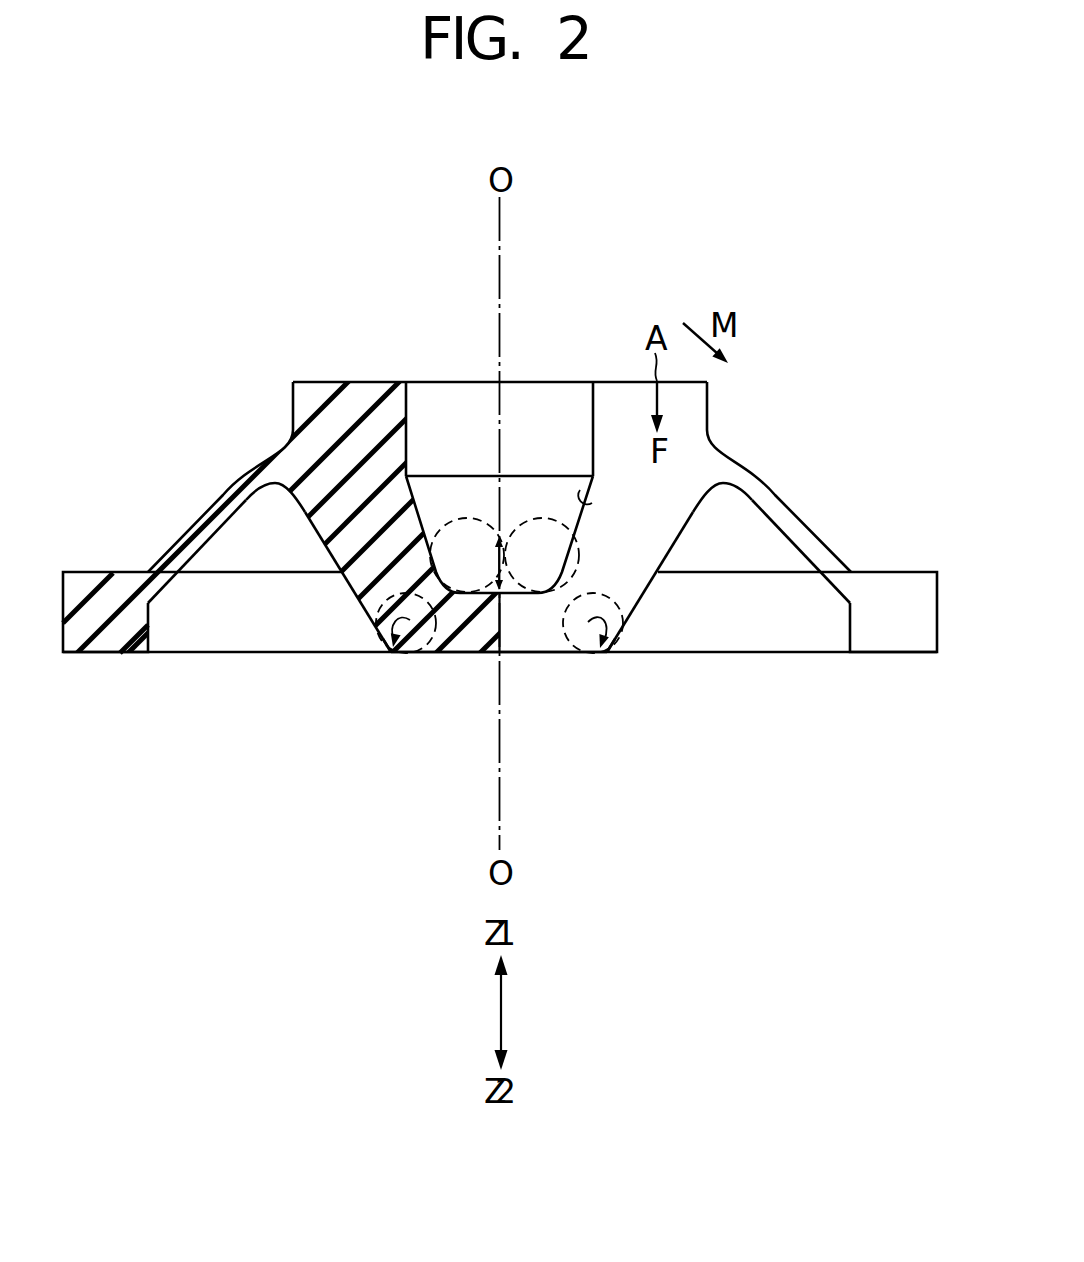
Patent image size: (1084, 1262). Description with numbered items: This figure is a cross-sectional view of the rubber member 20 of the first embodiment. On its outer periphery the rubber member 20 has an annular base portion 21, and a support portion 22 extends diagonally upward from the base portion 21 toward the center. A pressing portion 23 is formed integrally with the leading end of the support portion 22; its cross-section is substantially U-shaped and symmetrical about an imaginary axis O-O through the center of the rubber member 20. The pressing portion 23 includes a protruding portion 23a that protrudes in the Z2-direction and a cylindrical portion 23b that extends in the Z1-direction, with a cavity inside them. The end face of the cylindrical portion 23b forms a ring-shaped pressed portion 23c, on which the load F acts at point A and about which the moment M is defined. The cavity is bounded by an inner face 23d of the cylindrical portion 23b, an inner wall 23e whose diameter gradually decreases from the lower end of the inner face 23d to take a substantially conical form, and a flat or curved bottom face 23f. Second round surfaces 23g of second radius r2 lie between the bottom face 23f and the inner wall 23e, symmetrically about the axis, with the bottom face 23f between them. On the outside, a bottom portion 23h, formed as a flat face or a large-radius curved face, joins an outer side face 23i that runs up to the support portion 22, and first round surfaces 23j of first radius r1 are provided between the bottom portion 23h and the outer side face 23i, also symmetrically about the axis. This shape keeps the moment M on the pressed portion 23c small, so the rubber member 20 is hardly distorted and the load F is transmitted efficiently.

The rubber member 20 is at (701, 242).
The annular base portion 21 is at (103, 637).
The support portion 22 is at (193, 530).
The pressing portion 23 is at (250, 668).
The protruding portion 23a is at (313, 517).
The cylindrical portion 23b is at (690, 420).
The pressed portion 23c is at (337, 381).
The inner face 23d is at (593, 427).
The inner wall 23e is at (592, 493).
The bottom face 23f is at (497, 477).
The second round surfaces 23g is at (457, 598).
The bottom portion 23h is at (518, 653).
The outer side face 23i is at (345, 576).
The first round surfaces 23j is at (388, 652).
The first radius r1 is at (411, 653).
The second radius r2 is at (453, 572).